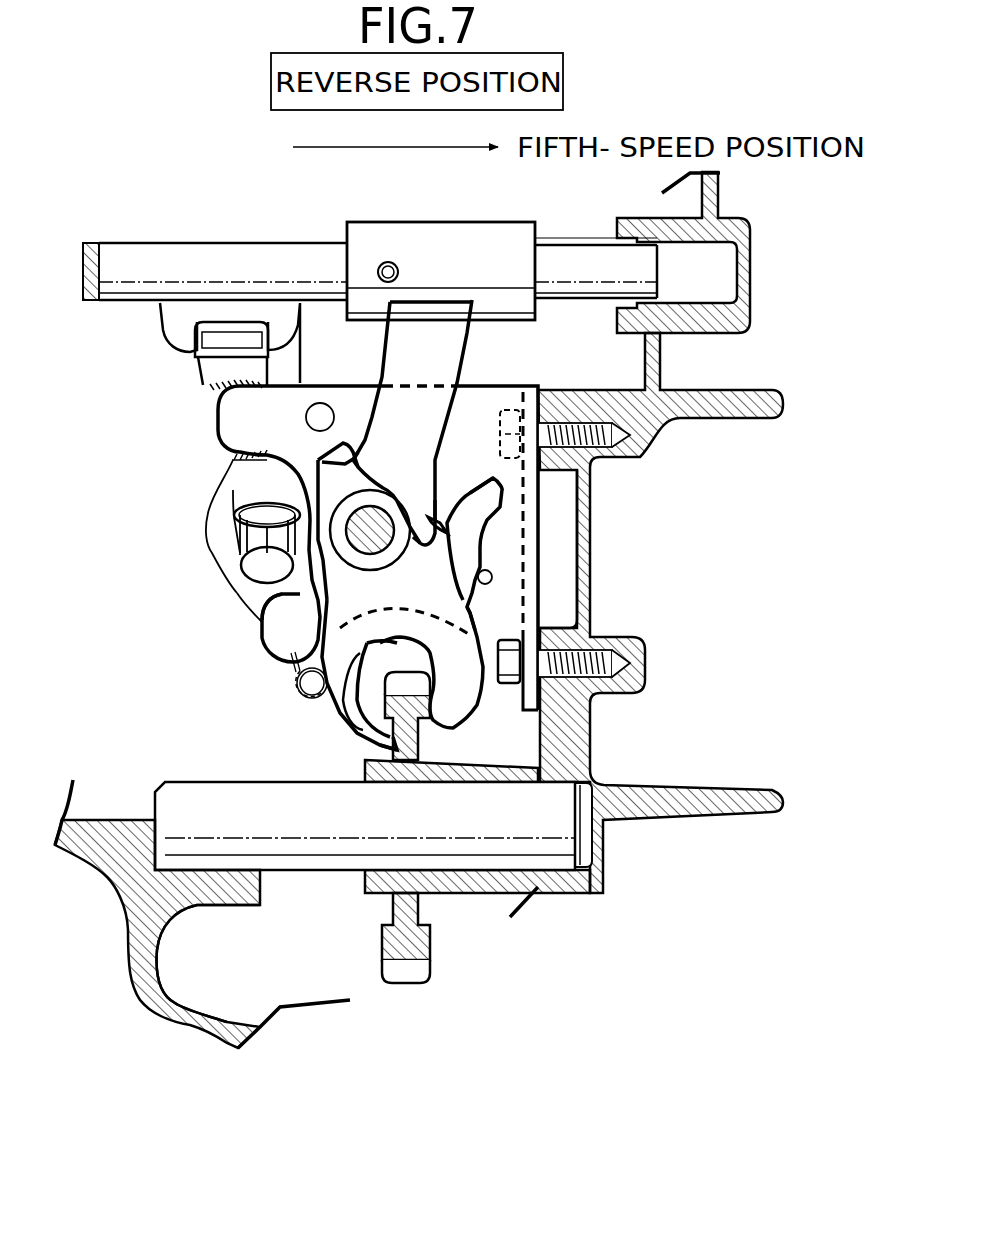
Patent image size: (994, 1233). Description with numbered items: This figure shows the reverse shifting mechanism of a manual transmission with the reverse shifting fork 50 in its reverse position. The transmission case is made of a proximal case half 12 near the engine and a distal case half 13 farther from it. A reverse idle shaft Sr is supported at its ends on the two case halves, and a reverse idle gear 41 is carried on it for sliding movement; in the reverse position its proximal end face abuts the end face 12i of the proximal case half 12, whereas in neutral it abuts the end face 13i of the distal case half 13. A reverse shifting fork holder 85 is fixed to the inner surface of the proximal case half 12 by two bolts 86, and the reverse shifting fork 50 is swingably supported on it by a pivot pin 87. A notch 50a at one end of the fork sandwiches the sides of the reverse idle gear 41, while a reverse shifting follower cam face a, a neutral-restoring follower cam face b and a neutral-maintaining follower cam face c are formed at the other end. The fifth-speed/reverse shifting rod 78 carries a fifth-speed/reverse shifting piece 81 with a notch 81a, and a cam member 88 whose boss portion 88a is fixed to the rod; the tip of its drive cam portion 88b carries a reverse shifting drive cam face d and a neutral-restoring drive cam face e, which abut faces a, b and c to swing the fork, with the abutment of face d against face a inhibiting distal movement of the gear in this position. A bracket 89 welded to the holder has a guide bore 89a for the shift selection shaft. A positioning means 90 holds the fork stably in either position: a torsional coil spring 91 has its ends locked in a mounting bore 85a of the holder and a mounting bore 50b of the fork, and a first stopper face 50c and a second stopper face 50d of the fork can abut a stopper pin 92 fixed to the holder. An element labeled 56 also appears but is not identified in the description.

The proximal case half 12 is at (677, 443).
The end face of the proximal case half 12i is at (525, 893).
The distal case half 13 is at (101, 873).
The end face of the distal case half 13i is at (262, 887).
The reverse idle gear 41 is at (398, 984).
The reverse shifting fork 50 is at (485, 701).
The notch 50a is at (393, 743).
The mounting bore 50b is at (372, 613).
The first stopper face 50c is at (492, 610).
The second stopper face 50d is at (610, 548).
The shift arm 56 is at (263, 600).
The fifth-speed/reverse shifting rod 78 is at (192, 252).
The fifth-speed/reverse shifting piece 81 is at (156, 328).
The notch 81a is at (217, 343).
The reverse shifting fork holder 85 is at (493, 382).
The mounting bore 85a is at (293, 656).
The bolts 86 is at (590, 458).
The pivot pin 87 is at (383, 510).
The cam member 88 is at (447, 218).
The boss portion 88a is at (522, 238).
The drive cam portion 88b is at (382, 376).
The bracket 89 is at (204, 514).
The guide bore 89a is at (240, 553).
The positioning means 90 is at (260, 660).
The torsional coil spring 91 is at (290, 674).
The stopper pin 92 is at (490, 573).
The reverse idle shaft Sr is at (212, 792).
The reverse shifting follower cam face a is at (360, 450).
The neutral-restoring follower cam face b is at (435, 522).
The neutral-maintaining follower cam face c is at (470, 488).
The reverse shifting drive cam face d is at (330, 457).
The neutral-restoring drive cam face e is at (423, 545).